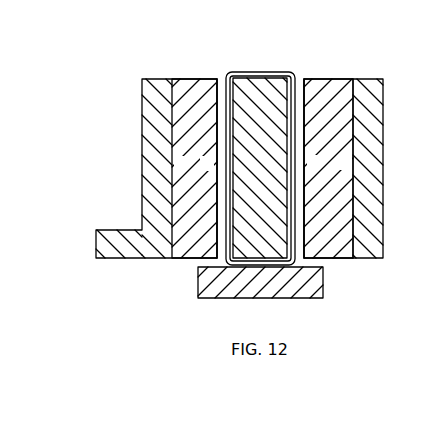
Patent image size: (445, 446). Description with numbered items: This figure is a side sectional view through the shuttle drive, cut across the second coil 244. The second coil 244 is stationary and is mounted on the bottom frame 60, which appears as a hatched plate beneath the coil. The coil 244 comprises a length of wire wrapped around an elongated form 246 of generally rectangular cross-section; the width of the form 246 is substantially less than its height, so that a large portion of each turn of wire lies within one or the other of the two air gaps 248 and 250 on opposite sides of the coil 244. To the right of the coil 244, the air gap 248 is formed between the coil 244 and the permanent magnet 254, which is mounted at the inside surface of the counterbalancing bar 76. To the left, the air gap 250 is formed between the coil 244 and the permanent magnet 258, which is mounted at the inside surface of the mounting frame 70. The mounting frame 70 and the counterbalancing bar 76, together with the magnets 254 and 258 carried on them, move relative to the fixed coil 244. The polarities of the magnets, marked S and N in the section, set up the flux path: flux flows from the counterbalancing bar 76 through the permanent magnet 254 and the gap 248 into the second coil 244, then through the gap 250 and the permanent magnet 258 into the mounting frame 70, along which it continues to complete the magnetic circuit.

The mounting frame 70 is at (114, 238).
The counterbalancing bar 76 is at (374, 219).
The bottom frame 60 is at (322, 289).
The second coil 244 is at (230, 74).
The elongated form 246 is at (268, 87).
The air gap 248 is at (301, 82).
The air gap 250 is at (221, 79).
The permanent magnet 254 is at (340, 247).
The permanent magnet 258 is at (188, 246).